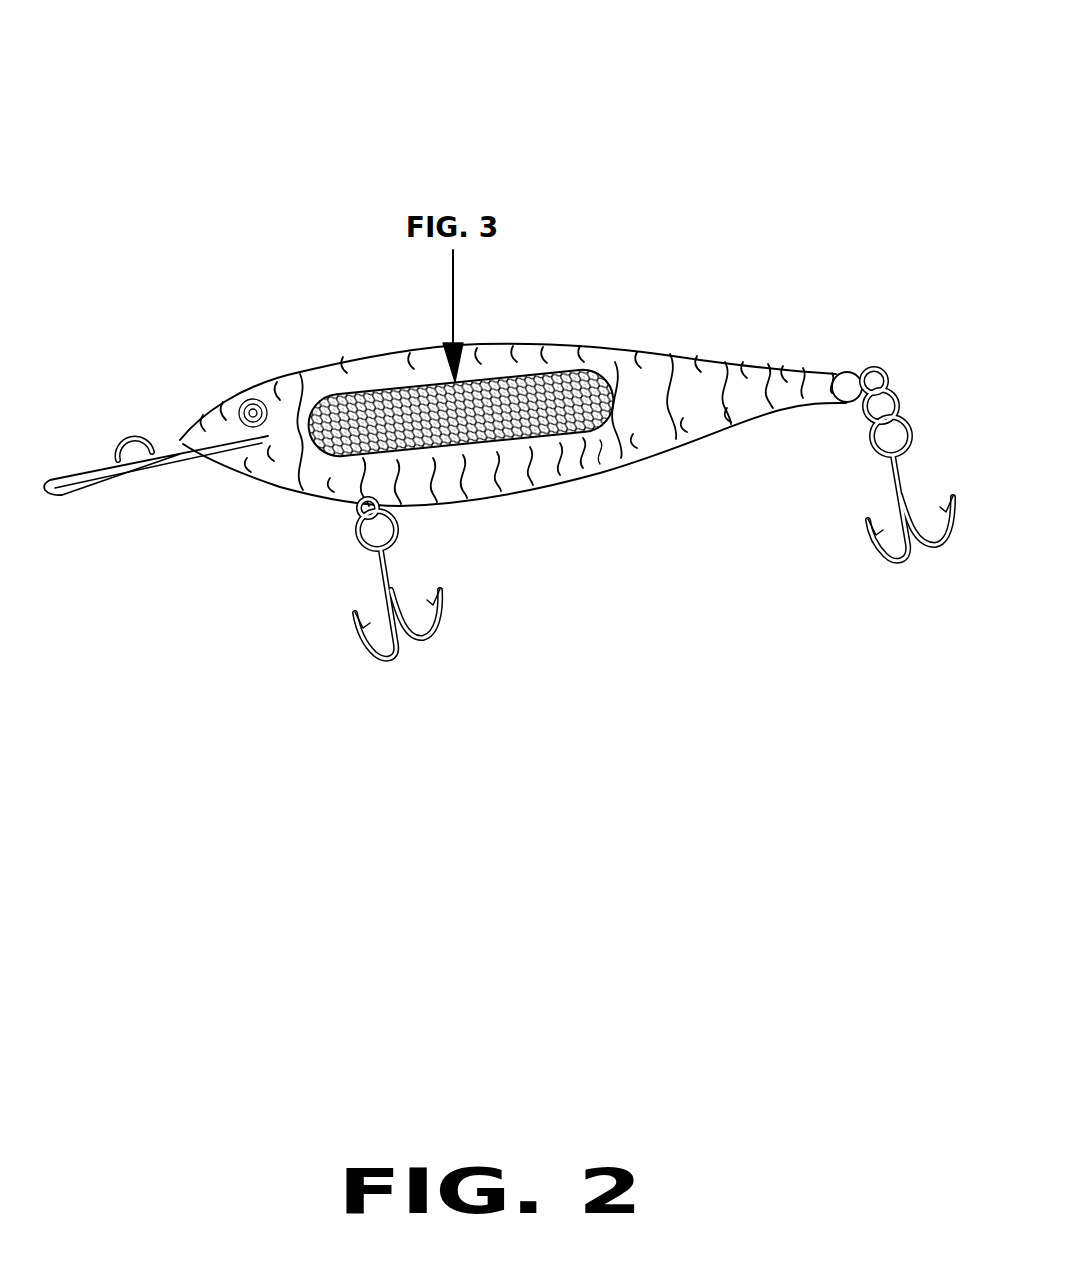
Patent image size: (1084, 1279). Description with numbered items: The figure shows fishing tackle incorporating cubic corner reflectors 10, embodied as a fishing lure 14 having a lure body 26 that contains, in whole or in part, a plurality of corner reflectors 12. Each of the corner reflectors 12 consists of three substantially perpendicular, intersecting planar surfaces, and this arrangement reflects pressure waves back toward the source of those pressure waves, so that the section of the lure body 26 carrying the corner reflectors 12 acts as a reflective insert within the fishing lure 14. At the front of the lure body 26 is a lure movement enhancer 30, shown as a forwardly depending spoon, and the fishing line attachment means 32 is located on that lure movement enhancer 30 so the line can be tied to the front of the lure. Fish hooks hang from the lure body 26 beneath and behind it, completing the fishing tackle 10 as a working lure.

The fishing tackle incorporating cubic corner reflector(s) 10 is at (498, 402).
The corner reflectors 12 is at (367, 390).
The fishing lure 14 is at (652, 340).
The lure body 26 is at (582, 477).
The lure movement enhancer 30 is at (80, 490).
The fishing line attachment means 32 is at (125, 430).